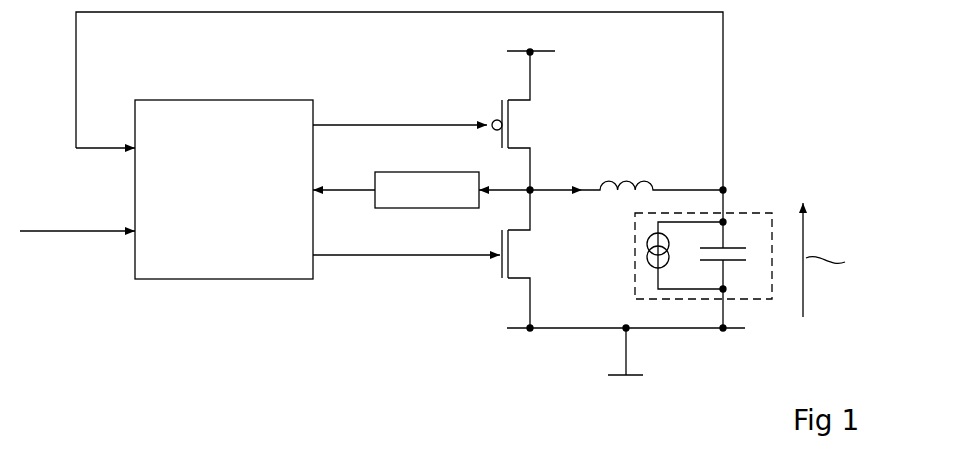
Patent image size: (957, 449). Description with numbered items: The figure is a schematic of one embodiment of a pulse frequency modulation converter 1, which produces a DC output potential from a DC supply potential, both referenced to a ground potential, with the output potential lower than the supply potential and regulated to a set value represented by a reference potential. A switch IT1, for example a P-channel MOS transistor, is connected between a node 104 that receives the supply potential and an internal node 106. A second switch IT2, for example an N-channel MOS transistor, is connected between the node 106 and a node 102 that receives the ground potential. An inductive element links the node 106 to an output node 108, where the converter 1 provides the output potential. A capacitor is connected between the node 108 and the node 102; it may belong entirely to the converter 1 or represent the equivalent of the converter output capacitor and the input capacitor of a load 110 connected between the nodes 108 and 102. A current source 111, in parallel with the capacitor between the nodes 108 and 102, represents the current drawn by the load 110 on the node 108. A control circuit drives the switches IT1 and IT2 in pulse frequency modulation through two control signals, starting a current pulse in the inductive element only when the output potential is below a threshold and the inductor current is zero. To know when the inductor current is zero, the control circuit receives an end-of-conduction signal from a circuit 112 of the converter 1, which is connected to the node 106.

The PFM converter 1 is at (176, 338).
The node 102 is at (533, 326).
The node 104 is at (535, 55).
The internal node 106 is at (533, 188).
The output node 108 is at (727, 188).
The load 110 is at (717, 297).
The current source 111 is at (670, 262).
The circuit 112 is at (413, 200).
The switch IT1 is at (512, 125).
The switch IT2 is at (512, 255).